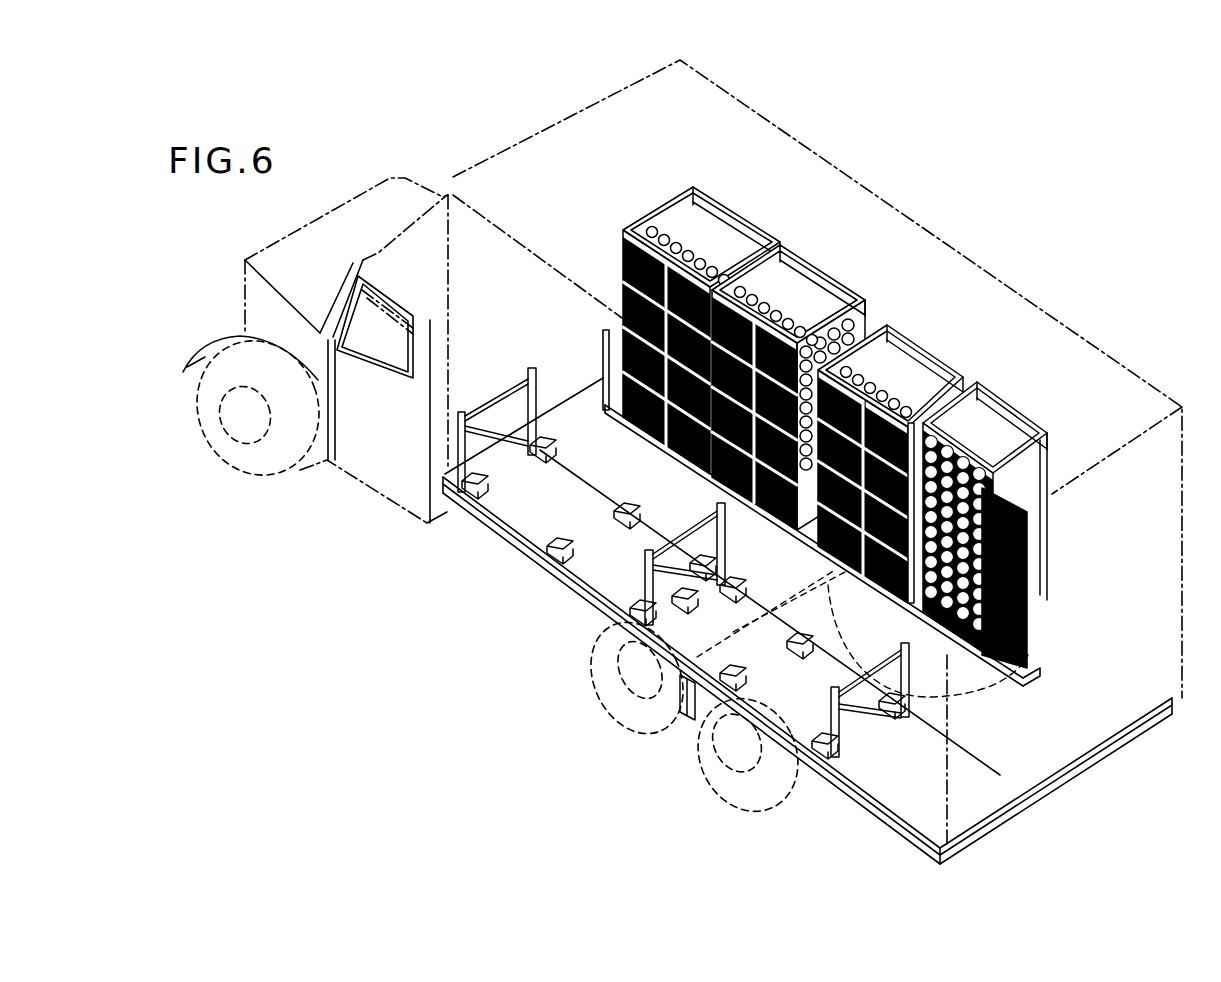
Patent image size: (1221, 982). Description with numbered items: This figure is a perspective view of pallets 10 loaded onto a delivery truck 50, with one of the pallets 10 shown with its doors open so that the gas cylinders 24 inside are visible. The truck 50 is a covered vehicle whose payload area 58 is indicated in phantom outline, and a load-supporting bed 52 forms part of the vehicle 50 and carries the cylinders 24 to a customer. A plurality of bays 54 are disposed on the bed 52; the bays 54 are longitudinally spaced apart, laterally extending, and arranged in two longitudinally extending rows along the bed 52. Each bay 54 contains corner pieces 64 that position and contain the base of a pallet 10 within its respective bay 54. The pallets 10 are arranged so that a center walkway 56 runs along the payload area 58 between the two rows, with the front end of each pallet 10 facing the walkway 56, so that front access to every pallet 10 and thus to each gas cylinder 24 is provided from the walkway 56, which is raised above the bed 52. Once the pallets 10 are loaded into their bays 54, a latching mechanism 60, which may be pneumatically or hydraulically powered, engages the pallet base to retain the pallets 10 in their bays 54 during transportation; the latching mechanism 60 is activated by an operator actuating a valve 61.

The pallet 10 is at (836, 403).
The gas cylinder 24 is at (977, 420).
The truck 50 is at (478, 138).
The load-supporting bed 52 is at (1092, 700).
The bay 54 is at (530, 507).
The center walkway 56 is at (943, 667).
The payload area 58 is at (939, 288).
The latching mechanism 60 is at (683, 607).
The valve 61 is at (680, 713).
The corner piece 64 is at (466, 500).